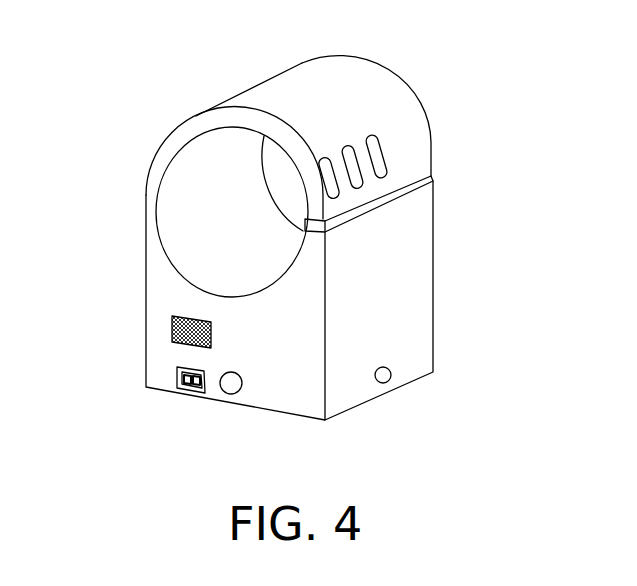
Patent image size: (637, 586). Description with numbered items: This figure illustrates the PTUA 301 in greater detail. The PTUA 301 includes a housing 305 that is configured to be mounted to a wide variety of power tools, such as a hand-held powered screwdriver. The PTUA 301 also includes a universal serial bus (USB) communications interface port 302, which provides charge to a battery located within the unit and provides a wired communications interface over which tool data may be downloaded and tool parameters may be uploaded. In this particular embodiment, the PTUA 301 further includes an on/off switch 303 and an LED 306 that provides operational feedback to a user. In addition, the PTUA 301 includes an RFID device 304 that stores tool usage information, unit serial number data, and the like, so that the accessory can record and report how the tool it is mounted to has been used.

The PTUA 301 is at (240, 88).
The universal serial bus (USB) communications interface port 302 is at (170, 324).
The on/off switch 303 is at (177, 380).
The RFID device 304 is at (302, 408).
The housing 305 is at (433, 200).
The LED 306 is at (388, 379).